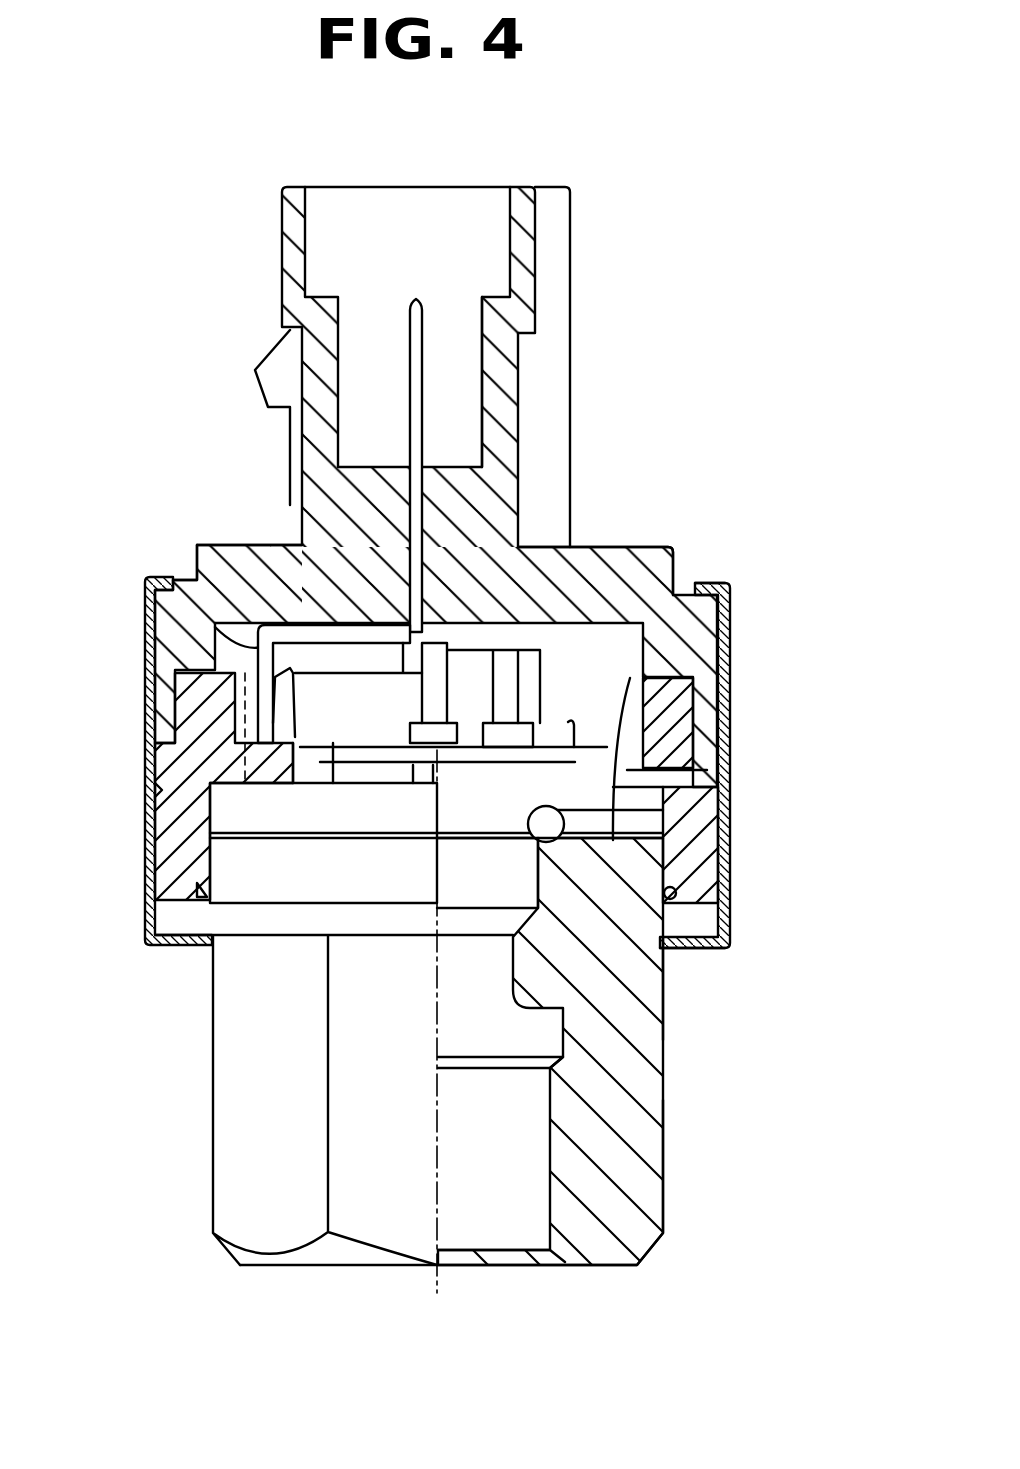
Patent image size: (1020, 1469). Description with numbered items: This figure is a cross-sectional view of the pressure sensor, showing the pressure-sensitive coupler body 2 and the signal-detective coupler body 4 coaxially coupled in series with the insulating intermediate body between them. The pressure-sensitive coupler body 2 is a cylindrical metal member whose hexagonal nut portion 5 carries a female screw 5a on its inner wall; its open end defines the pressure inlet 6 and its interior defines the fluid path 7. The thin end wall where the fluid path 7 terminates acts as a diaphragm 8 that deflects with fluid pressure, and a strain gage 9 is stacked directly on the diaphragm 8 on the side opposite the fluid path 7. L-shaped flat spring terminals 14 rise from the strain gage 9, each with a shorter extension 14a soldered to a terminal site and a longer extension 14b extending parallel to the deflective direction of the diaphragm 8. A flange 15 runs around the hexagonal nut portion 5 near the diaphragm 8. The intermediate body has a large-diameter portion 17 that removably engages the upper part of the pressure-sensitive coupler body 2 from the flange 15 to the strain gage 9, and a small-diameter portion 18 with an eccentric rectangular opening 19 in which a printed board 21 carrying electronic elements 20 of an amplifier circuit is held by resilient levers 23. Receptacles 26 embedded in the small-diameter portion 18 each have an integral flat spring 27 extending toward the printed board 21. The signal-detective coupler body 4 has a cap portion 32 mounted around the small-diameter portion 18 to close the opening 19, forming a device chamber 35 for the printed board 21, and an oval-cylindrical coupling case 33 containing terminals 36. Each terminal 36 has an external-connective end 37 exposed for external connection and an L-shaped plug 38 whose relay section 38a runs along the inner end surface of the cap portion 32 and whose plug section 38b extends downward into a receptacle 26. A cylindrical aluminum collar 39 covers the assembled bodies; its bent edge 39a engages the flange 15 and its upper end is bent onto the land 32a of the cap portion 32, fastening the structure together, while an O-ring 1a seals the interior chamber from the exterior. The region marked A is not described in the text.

The O-ring 1a is at (180, 878).
The pressure-sensitive coupler body 2 is at (185, 1070).
The signal-detective coupler body 4 is at (250, 280).
The hexagonal nut portion 5 is at (663, 1195).
The female screw 5a is at (548, 1195).
The pressure inlet 6 is at (455, 1240).
The fluid path 7 is at (520, 1035).
The diaphragm 8 is at (470, 847).
The strain gage 9 is at (378, 823).
The terminal 14 is at (808, 732).
The shorter extension 14a is at (673, 813).
The longer extension 14b is at (707, 773).
The flange 15 is at (190, 945).
The large-diameter portion 17 is at (690, 865).
The small-diameter portion 18 is at (680, 680).
The rectangular opening 19 is at (350, 697).
The electronic elements 20 is at (503, 737).
The printed board 21 is at (575, 714).
The lever 23 is at (467, 670).
The receptacle 26 is at (235, 703).
The flat spring 27 is at (323, 841).
The cap portion 32 is at (705, 720).
The land 32a is at (677, 590).
The coupling case 33 is at (535, 238).
The device chamber 35 is at (622, 623).
The terminal 36 is at (460, 433).
The external-connective end 37 is at (425, 380).
The plug 38 is at (238, 497).
The relay section 38a is at (297, 632).
The plug section 38b is at (198, 578).
The collar 39 is at (148, 742).
The bent edge 39a is at (730, 940).
The region A is at (663, 988).